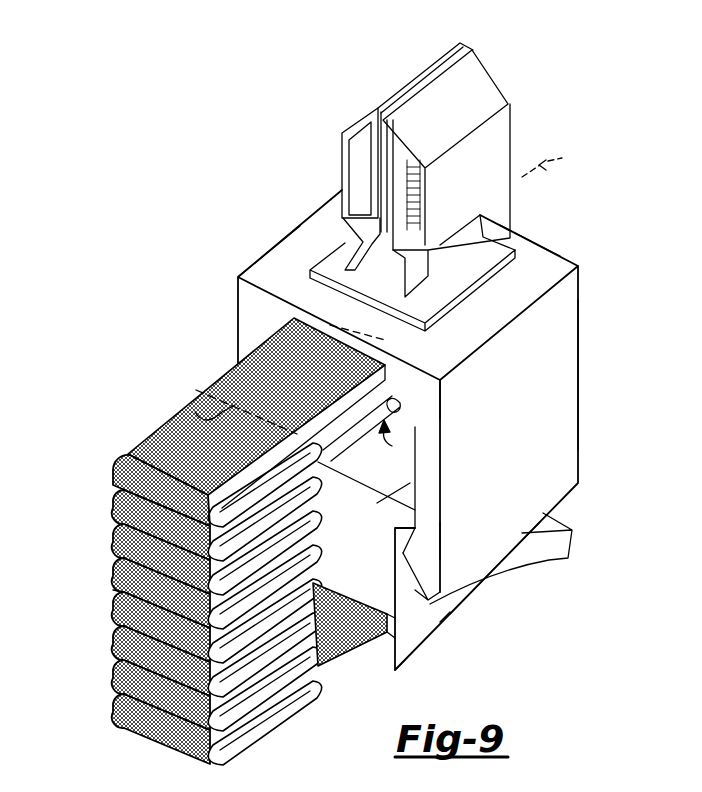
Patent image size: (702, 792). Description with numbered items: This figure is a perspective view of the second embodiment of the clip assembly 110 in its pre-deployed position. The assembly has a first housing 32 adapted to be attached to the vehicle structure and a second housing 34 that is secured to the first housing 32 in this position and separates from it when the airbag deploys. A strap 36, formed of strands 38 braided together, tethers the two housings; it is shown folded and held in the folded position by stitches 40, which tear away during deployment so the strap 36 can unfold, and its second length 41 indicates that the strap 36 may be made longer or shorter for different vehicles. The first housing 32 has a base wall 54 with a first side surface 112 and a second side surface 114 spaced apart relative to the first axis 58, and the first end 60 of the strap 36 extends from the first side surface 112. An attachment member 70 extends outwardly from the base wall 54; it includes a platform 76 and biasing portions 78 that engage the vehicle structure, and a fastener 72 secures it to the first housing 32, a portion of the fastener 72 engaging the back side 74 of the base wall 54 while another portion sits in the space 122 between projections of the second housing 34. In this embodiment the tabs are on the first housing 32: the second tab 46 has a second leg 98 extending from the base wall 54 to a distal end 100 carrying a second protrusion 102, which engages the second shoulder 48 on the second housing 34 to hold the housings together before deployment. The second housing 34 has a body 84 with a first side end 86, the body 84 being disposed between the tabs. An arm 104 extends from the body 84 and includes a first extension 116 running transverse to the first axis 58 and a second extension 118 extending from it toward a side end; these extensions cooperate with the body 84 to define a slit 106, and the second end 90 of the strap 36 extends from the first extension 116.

The first housing 32 is at (580, 265).
The second housing 34 is at (412, 485).
The strap 36 is at (148, 432).
The strands 38 is at (200, 408).
The stitches 40 is at (215, 398).
The second length 41 is at (112, 590).
The second tab 46 is at (470, 582).
The second shoulder 48 is at (412, 520).
The base wall 54 is at (537, 241).
The first axis 58 is at (384, 340).
The first end 60 is at (441, 381).
The attachment member 70 is at (438, 57).
The fastener 72 is at (356, 232).
The back side 74 is at (402, 403).
The platform 76 is at (444, 290).
The biasing portions 78 is at (356, 118).
The body 84 is at (360, 468).
The first side end 86 is at (380, 532).
The second end 90 is at (385, 636).
The second leg 98 is at (563, 392).
The distal end 100 is at (438, 537).
The second protrusion 102 is at (451, 614).
The arm 104 is at (398, 672).
The slit 106 is at (567, 515).
The clip assembly 110 is at (615, 178).
The first side surface 112 is at (273, 311).
The second side surface 114 is at (553, 252).
The first extension 116 is at (340, 578).
The second extension 118 is at (548, 550).
The space 122 is at (398, 446).